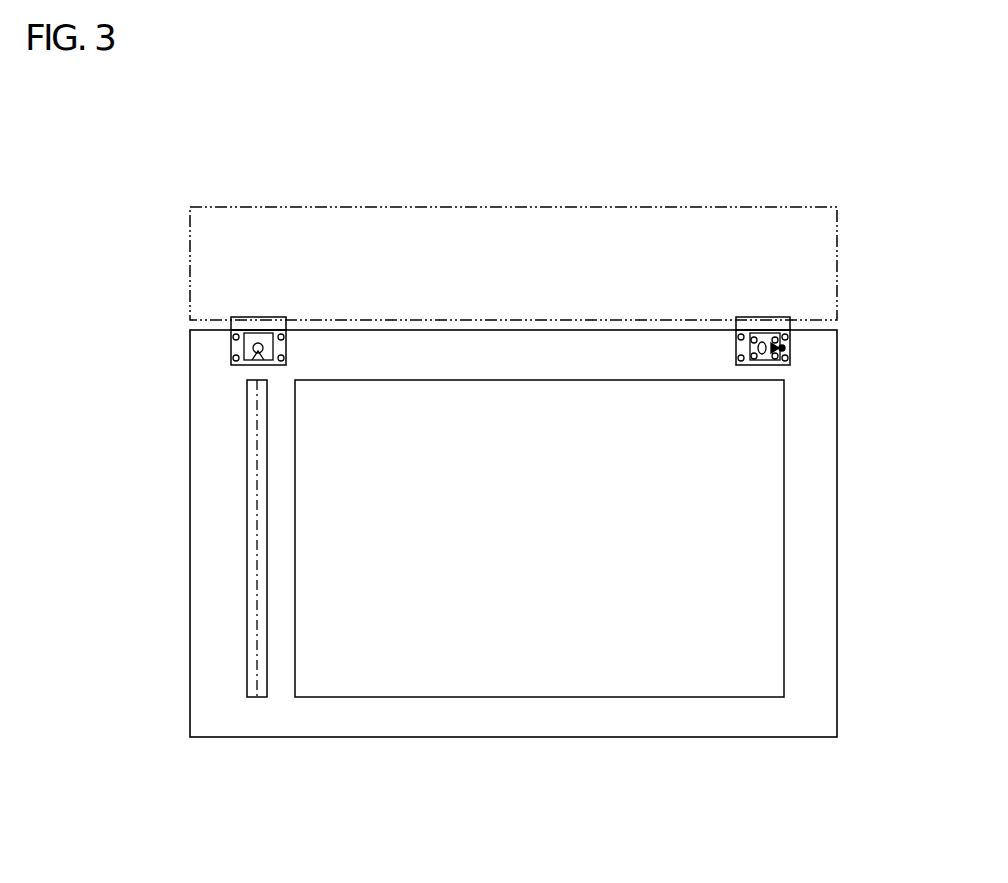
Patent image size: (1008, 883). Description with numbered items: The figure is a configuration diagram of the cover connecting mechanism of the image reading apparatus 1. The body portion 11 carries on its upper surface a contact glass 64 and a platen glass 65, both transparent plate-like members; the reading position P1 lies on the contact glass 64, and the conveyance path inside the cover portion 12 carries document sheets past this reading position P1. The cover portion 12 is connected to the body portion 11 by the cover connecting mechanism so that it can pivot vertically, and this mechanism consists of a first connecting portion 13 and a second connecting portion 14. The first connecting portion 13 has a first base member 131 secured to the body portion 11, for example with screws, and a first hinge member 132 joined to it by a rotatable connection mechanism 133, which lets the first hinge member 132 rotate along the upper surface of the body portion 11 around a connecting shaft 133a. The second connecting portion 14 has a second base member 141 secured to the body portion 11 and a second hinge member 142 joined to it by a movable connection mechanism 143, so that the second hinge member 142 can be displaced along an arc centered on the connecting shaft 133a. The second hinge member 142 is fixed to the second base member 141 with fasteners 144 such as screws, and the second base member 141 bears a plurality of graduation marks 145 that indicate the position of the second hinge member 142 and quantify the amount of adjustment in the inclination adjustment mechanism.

The image reading apparatus 1 is at (847, 176).
The body portion 11 is at (190, 487).
The cover portion 12 is at (572, 207).
The first connecting portion 13 is at (292, 344).
The second connecting portion 14 is at (740, 346).
The first base member 131 is at (231, 349).
The first hinge member 132 is at (262, 317).
The rotatable connection mechanism 133 is at (260, 362).
The connecting shaft 133a is at (265, 351).
The second base member 141 is at (736, 350).
The second hinge member 142 is at (758, 318).
The movable connection mechanism 143 is at (763, 361).
The fasteners 144 is at (738, 338).
The graduation marks 145 is at (787, 347).
The contact glass 64 is at (258, 698).
The platen glass 65 is at (343, 698).
The reading position P1 is at (259, 507).